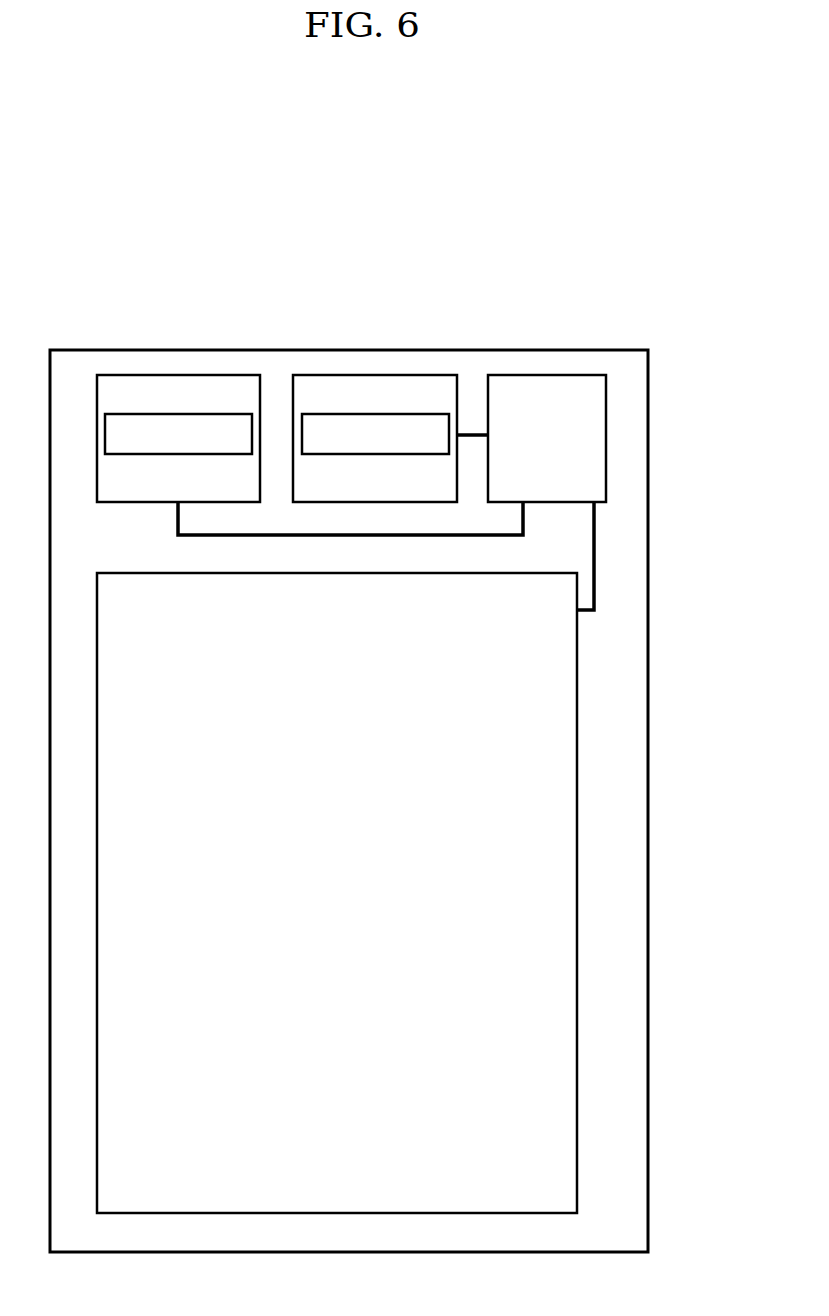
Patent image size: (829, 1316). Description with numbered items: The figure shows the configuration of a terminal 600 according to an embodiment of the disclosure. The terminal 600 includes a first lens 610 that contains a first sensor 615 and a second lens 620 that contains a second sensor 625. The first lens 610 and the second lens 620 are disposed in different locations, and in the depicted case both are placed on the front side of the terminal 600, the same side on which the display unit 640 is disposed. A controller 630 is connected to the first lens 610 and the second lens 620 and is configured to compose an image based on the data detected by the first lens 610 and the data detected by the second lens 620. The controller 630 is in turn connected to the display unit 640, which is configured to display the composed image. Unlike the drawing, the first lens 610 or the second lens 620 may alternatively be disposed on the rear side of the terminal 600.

The terminal 600 is at (608, 349).
The first lens 610 is at (165, 375).
The first sensor 615 is at (127, 414).
The second lens 620 is at (370, 375).
The second sensor 625 is at (334, 414).
The controller 630 is at (527, 375).
The display unit 640 is at (577, 877).